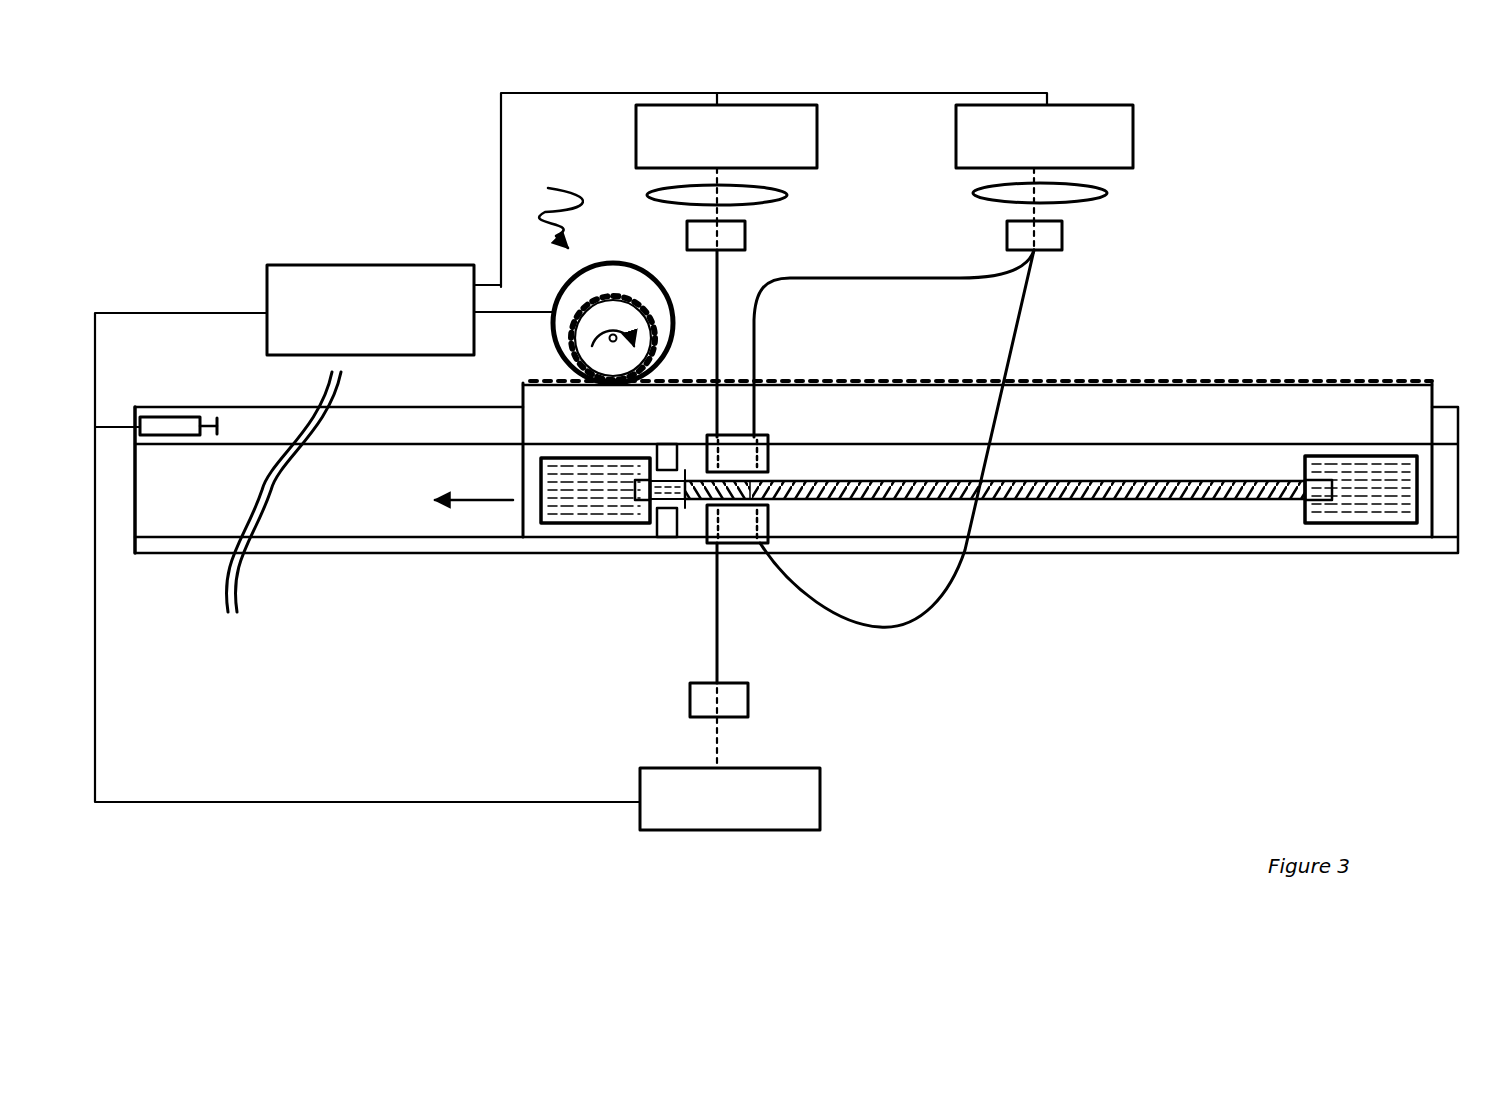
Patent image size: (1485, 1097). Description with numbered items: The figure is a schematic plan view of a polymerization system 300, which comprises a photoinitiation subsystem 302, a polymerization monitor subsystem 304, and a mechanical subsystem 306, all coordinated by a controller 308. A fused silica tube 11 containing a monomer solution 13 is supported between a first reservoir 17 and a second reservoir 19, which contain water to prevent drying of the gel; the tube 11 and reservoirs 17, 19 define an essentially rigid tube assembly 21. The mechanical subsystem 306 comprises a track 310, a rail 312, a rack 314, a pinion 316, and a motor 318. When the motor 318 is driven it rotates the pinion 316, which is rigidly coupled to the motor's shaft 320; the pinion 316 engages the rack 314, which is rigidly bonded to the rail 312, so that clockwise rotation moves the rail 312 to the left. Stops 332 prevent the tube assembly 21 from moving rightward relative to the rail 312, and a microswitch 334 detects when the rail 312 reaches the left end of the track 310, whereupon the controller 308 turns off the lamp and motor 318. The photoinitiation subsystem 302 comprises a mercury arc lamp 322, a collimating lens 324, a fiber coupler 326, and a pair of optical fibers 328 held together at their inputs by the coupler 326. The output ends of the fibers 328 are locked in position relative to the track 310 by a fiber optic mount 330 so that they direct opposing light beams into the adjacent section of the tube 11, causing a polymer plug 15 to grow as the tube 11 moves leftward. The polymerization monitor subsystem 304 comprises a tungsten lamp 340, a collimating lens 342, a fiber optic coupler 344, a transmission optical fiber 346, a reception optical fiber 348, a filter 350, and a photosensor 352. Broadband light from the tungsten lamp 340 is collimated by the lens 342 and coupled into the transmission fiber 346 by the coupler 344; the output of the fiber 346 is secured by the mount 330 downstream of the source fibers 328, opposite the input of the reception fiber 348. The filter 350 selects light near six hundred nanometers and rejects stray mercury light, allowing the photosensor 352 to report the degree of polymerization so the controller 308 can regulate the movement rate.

The system 300 is at (408, 848).
The photoinitiation subsystem 302 is at (1138, 100).
The polymerization monitor subsystem 304 is at (717, 88).
The mechanical subsystem 306 is at (553, 203).
The controller 308 is at (355, 332).
The track 310 is at (309, 521).
The rail 312 is at (1245, 513).
The rack 314 is at (1085, 383).
The pinion 316 is at (612, 300).
The motor 318 is at (573, 290).
The shaft 320 is at (613, 338).
The mercury arc lamp 322 is at (1133, 136).
The collimating lens 324 is at (1107, 193).
The fiber coupler 326 is at (1062, 233).
The optical fibers 328 is at (920, 282).
The fiber optic mount 330 is at (768, 455).
The stops 332 is at (665, 452).
The microswitch 334 is at (173, 417).
The tungsten lamp 340 is at (817, 128).
The collimating lens 342 is at (787, 193).
The fiber optic coupler 344 is at (745, 235).
The transmission optical fiber 346 is at (718, 285).
The reception optical fiber 348 is at (718, 628).
The filter 350 is at (748, 700).
The photosensor 352 is at (820, 800).
The fused silica tube 11 is at (1055, 499).
The monomer solution 13 is at (1147, 499).
The polymer plug 15 is at (688, 503).
The first reservoir 17 is at (556, 523).
The second reservoir 19 is at (1368, 523).
The tube assembly 21 is at (537, 477).